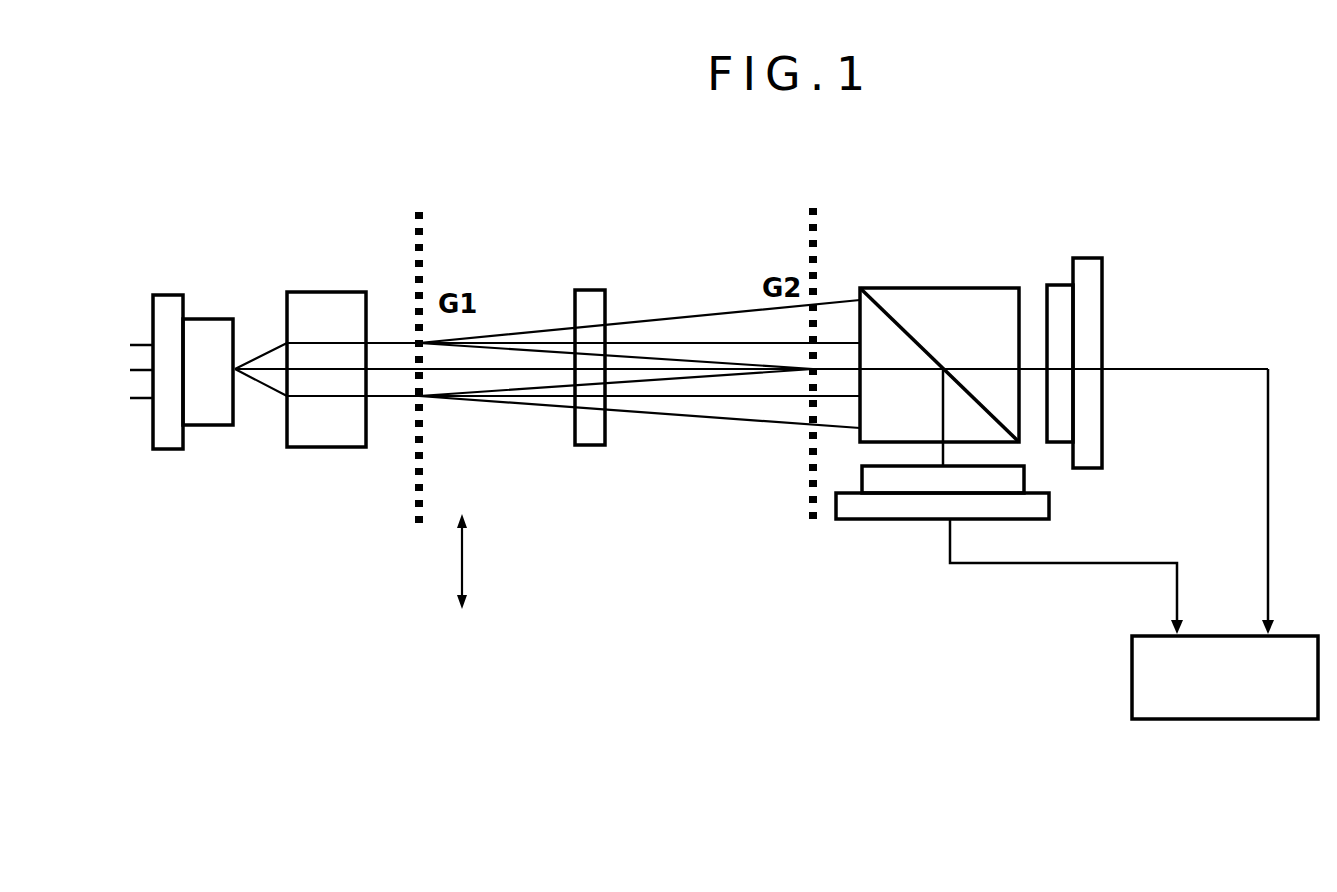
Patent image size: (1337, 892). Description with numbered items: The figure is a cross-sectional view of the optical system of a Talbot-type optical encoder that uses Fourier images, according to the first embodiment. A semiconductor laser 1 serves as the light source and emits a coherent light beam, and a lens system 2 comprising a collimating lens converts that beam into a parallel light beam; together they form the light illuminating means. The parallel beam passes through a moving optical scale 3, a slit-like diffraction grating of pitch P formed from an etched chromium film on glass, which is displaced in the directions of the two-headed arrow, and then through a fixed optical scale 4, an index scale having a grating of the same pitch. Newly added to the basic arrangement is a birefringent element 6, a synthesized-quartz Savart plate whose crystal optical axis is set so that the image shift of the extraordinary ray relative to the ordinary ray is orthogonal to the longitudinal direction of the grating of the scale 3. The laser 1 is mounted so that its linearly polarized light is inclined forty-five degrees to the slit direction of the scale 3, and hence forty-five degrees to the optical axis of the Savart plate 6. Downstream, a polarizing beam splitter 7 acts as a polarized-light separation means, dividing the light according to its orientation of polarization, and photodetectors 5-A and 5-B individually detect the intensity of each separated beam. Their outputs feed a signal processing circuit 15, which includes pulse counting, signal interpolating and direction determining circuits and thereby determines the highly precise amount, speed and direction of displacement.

The semiconductor laser 1 is at (167, 304).
The lens system 2 is at (320, 300).
The moving optical scale 3 is at (420, 212).
The fixed optical scale 4 is at (814, 208).
The birefringent element 6 is at (590, 290).
The polarizing beam splitter 7 is at (952, 298).
The photodetector 5-A is at (1088, 268).
The photodetector 5-B is at (878, 511).
The signal processing circuit 15 is at (1132, 672).